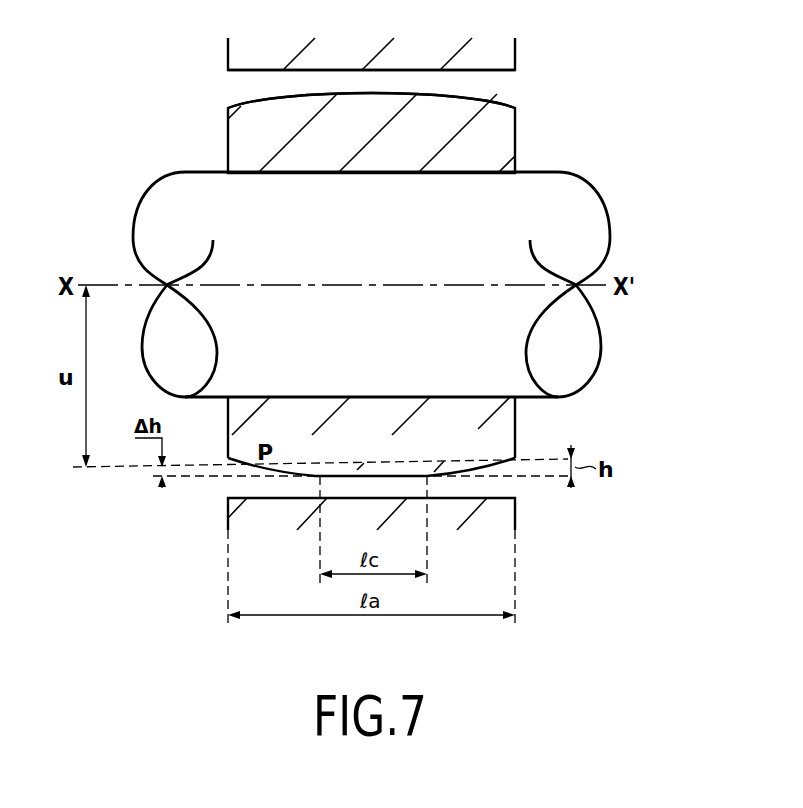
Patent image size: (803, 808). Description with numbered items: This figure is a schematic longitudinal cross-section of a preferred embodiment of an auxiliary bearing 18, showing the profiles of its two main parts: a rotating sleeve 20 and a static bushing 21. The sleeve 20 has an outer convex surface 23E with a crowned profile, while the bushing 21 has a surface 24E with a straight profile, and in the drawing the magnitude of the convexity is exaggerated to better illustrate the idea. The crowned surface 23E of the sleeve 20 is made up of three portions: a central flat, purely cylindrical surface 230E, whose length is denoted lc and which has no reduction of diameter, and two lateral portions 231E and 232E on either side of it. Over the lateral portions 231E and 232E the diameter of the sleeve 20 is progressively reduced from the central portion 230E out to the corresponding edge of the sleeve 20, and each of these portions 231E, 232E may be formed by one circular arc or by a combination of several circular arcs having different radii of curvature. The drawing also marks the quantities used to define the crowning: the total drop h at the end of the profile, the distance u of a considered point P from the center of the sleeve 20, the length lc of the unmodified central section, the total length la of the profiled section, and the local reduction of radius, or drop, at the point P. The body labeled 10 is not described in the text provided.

The ring-shaped body 10 is at (163, 210).
The auxiliary bearing 18 is at (193, 497).
The sleeve 20 is at (242, 141).
The bushing 21 is at (243, 58).
The surface 23E is at (487, 100).
The surface 24E is at (408, 71).
The central flat purely cylindrical surface 230E is at (385, 470).
The lateral portion 231E is at (273, 468).
The lateral portion 232E is at (472, 470).